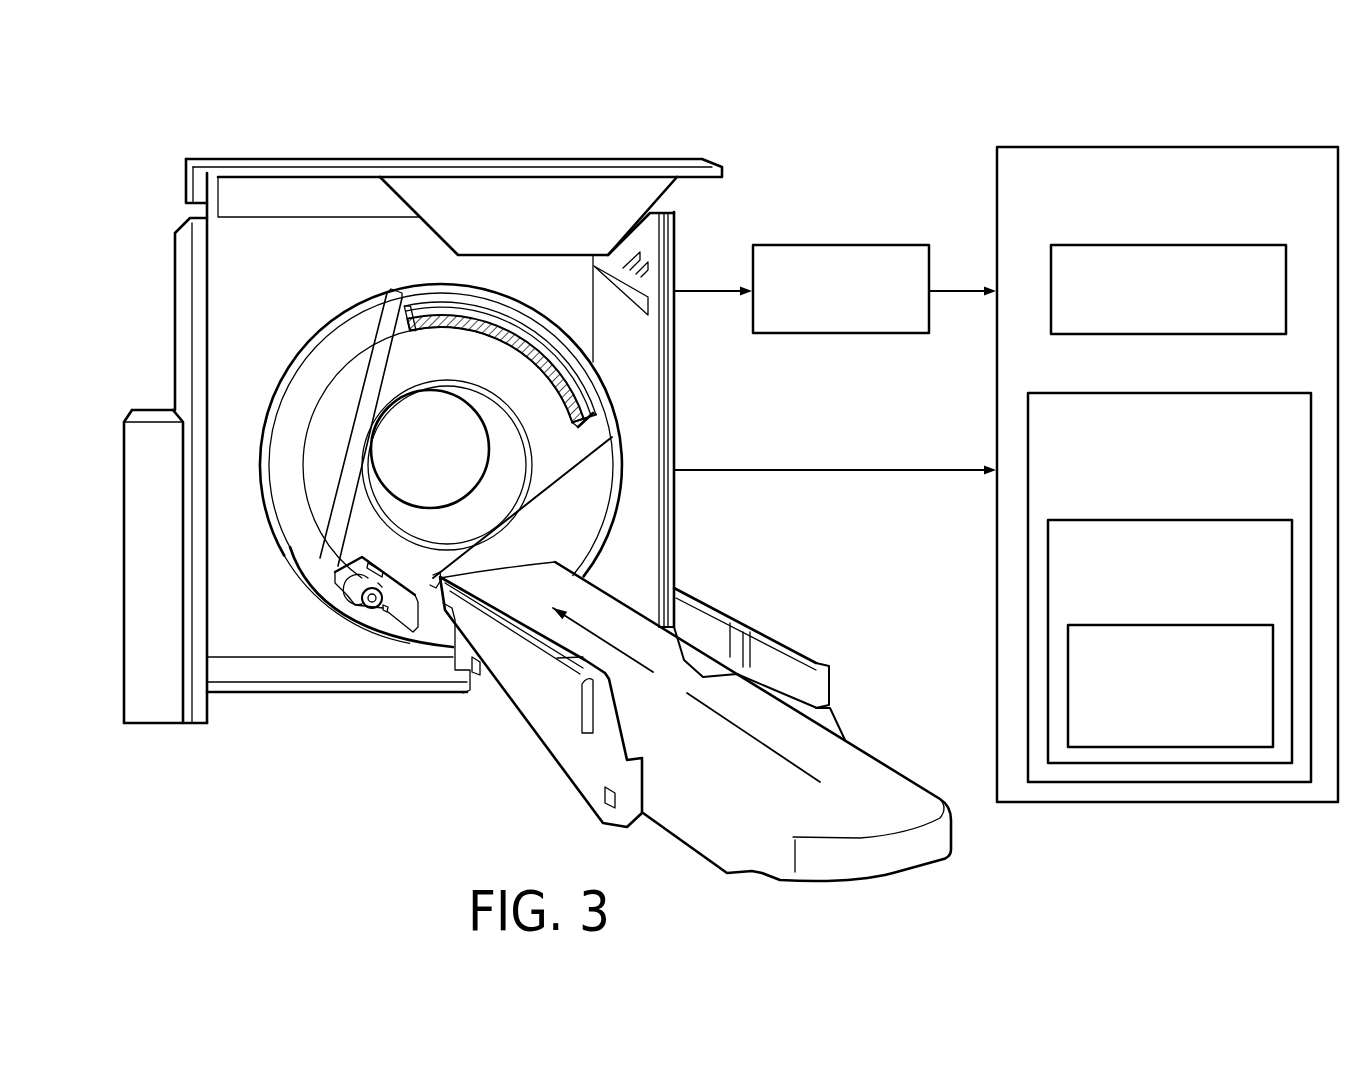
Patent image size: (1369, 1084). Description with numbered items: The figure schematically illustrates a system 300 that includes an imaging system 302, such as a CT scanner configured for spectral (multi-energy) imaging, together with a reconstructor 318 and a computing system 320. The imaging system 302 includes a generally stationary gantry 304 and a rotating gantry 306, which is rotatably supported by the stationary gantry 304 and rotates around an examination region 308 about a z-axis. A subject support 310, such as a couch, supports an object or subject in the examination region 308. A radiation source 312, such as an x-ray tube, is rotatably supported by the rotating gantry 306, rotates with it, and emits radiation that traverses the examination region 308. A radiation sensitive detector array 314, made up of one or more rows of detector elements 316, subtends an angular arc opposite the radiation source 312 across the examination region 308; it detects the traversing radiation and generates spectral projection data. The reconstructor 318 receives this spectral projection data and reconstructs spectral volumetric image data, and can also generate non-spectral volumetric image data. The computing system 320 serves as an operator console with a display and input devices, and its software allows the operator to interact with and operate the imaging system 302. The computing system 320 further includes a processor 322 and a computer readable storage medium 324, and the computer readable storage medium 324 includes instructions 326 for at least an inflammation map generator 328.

The system 300 is at (150, 146).
The imaging system 302 is at (262, 147).
The stationary gantry 304 is at (188, 284).
The rotating gantry 306 is at (408, 363).
The examination region 308 is at (402, 464).
The subject support 310 is at (900, 788).
The radiation source 312 is at (379, 612).
The radiation sensitive detector array 314 is at (580, 397).
The detector elements 316 is at (403, 323).
The reconstructor 318 is at (820, 318).
The computing system 320 is at (1146, 226).
The processor 322 is at (1146, 317).
The computer readable storage medium 324 is at (1146, 496).
The instructions 326 is at (1146, 593).
The inflammation map generator 328 is at (1146, 729).